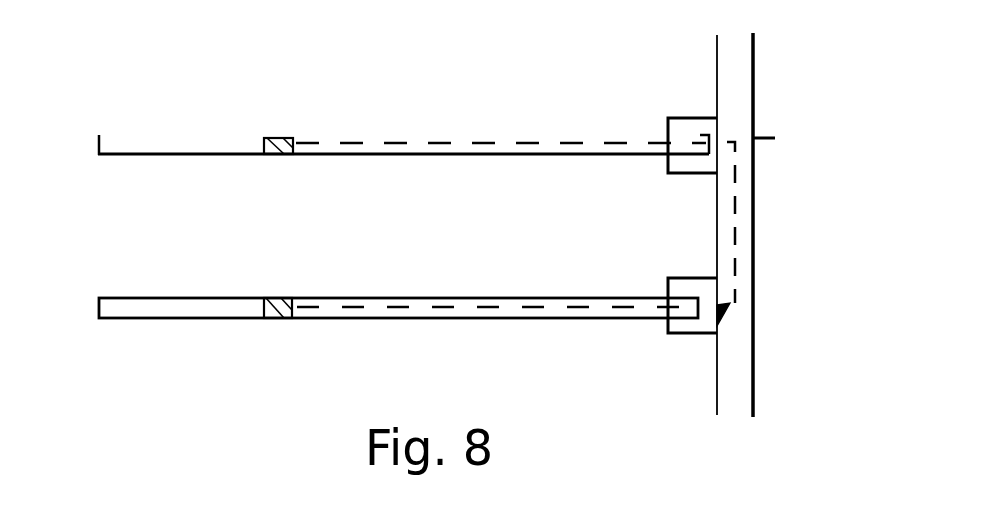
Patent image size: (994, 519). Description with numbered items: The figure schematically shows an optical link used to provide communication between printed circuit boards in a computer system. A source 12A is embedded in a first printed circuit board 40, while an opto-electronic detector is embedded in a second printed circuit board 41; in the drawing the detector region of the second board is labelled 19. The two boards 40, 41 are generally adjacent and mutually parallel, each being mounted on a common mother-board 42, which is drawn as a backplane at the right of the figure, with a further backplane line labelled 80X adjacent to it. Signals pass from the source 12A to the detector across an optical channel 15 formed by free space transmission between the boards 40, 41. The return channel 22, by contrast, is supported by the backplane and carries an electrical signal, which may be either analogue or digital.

The source 12A is at (252, 128).
The optical channel 15 is at (295, 223).
The hatched coupling block on lower plate 19 is at (262, 323).
The return channel 22 is at (712, 332).
The first printed circuit board 40 is at (132, 160).
The second printed circuit board 41 is at (123, 322).
The mother-board 42 is at (746, 55).
The thin wall with clamp brackets 80X is at (718, 225).